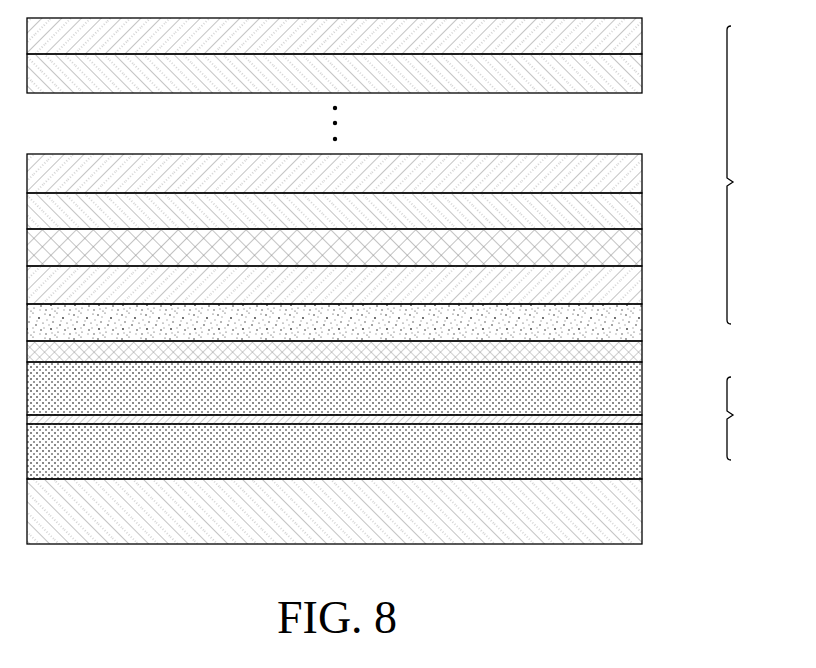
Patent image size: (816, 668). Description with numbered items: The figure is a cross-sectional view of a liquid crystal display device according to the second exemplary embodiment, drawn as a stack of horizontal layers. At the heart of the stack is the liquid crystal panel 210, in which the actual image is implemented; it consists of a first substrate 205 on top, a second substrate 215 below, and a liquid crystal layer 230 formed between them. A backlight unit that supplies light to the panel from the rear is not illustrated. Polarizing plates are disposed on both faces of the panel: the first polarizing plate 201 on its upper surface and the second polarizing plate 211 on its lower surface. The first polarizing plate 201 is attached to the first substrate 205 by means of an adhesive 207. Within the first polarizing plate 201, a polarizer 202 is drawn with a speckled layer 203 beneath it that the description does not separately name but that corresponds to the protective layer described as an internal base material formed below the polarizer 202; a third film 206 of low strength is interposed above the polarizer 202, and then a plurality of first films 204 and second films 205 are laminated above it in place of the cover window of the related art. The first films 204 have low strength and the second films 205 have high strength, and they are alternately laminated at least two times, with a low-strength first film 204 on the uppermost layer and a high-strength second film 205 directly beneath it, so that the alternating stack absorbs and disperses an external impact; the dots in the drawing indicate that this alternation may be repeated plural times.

The first polarizing plate 201 is at (747, 175).
The polarizer 202 is at (638, 285).
The emission layer 203 is at (638, 322).
The first film 204 is at (638, 36).
The second film 205 is at (638, 72).
The third film 206 is at (638, 247).
The adhesive 207 is at (638, 352).
The liquid crystal panel 210 is at (747, 418).
The second polarizing plate 211 is at (638, 510).
The second substrate 215 is at (638, 453).
The liquid crystal layer 230 is at (638, 420).